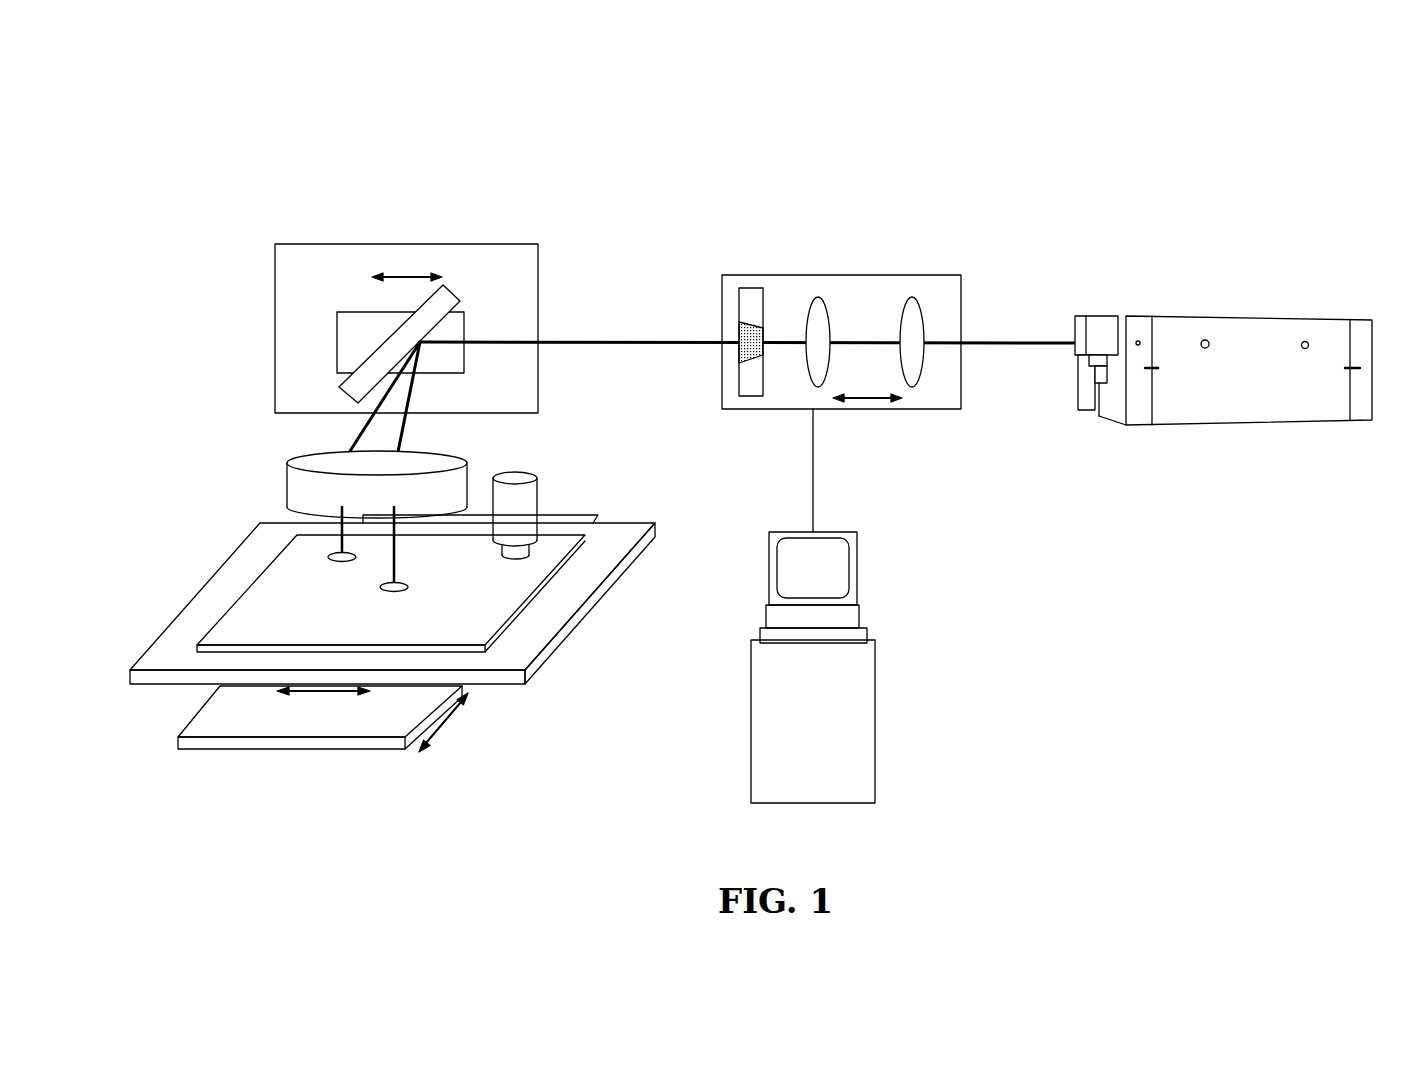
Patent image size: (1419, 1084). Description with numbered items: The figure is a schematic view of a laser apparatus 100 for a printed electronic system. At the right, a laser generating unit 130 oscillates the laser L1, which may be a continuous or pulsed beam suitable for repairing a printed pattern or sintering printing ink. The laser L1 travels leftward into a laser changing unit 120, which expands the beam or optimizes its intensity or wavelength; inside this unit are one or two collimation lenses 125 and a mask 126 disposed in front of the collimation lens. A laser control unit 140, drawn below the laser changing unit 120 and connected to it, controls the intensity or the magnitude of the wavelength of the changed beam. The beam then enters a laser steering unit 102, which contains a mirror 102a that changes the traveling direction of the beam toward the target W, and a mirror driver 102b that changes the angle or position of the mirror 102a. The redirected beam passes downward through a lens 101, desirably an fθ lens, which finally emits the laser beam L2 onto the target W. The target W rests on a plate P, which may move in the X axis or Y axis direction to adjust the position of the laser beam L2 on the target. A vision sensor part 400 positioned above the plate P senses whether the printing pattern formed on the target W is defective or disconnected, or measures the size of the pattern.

The laser apparatus 100 is at (809, 114).
The lens 101 is at (293, 463).
The laser steering unit 102 is at (445, 294).
The mirror 102a is at (448, 295).
The mirror driver 102b is at (462, 363).
The laser changing unit 120 is at (851, 309).
The collimation lenses 125 is at (907, 308).
The mask 126 is at (753, 293).
The laser generating unit 130 is at (1227, 316).
The laser control unit 140 is at (845, 532).
The vision sensor part 400 is at (537, 487).
The laser L1 is at (1020, 343).
The laser beam L2 is at (307, 544).
The plate P is at (627, 530).
The target W is at (253, 610).
The X axis X is at (443, 723).
The Y axis Y is at (323, 709).